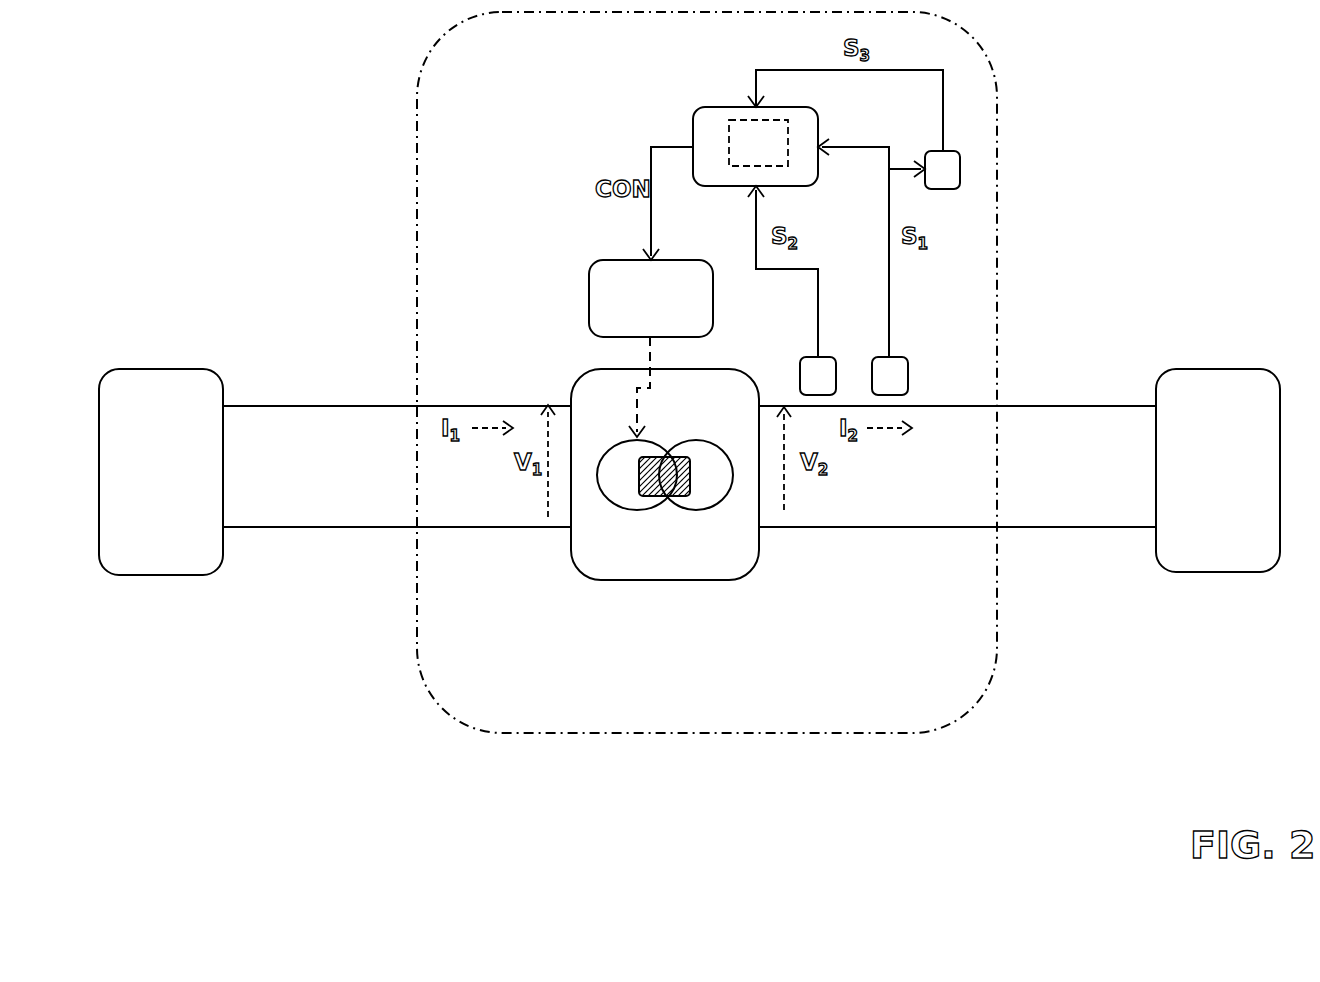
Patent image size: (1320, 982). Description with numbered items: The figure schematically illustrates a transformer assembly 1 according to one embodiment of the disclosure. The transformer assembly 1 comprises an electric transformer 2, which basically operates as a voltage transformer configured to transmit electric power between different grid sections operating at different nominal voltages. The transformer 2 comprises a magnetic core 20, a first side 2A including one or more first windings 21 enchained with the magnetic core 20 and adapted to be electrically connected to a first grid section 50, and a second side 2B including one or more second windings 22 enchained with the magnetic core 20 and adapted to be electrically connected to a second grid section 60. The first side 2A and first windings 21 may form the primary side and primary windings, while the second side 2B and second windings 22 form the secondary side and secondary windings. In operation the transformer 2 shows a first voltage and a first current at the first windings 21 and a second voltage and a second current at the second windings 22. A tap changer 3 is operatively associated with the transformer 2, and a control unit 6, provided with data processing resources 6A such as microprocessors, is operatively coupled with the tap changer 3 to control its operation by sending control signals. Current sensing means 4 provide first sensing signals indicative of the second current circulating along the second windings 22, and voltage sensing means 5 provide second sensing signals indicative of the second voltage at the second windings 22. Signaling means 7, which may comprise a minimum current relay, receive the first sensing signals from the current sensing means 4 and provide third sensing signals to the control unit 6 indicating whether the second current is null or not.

The transformer assembly 1 is at (352, 142).
The electric transformer 2 is at (665, 509).
The first side 2A is at (552, 543).
The second side 2B is at (789, 535).
The magnetic core 20 is at (668, 488).
The first windings 21 is at (630, 503).
The second windings 22 is at (702, 497).
The tap changer 3 is at (605, 270).
The current sensing means 4 is at (900, 368).
The voltage sensing means 5 is at (808, 368).
The control unit 6 is at (738, 128).
The data processing resources 6A is at (712, 127).
The signaling means 7 is at (948, 163).
The first grid section 50 is at (157, 576).
The second grid section 60 is at (1215, 573).